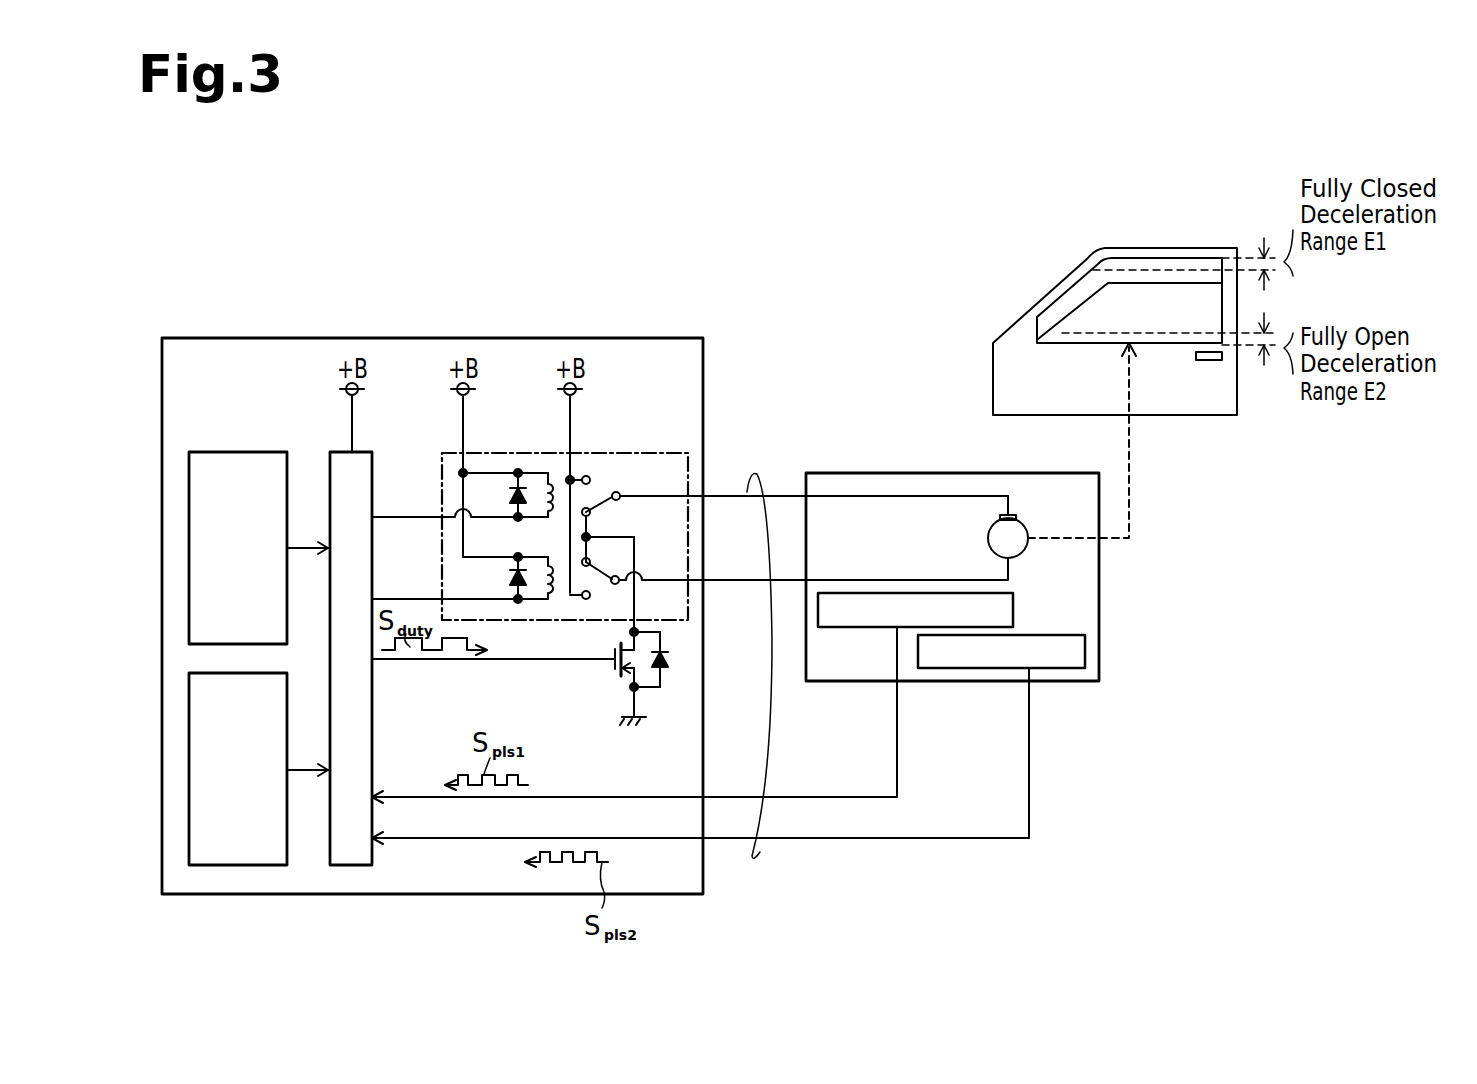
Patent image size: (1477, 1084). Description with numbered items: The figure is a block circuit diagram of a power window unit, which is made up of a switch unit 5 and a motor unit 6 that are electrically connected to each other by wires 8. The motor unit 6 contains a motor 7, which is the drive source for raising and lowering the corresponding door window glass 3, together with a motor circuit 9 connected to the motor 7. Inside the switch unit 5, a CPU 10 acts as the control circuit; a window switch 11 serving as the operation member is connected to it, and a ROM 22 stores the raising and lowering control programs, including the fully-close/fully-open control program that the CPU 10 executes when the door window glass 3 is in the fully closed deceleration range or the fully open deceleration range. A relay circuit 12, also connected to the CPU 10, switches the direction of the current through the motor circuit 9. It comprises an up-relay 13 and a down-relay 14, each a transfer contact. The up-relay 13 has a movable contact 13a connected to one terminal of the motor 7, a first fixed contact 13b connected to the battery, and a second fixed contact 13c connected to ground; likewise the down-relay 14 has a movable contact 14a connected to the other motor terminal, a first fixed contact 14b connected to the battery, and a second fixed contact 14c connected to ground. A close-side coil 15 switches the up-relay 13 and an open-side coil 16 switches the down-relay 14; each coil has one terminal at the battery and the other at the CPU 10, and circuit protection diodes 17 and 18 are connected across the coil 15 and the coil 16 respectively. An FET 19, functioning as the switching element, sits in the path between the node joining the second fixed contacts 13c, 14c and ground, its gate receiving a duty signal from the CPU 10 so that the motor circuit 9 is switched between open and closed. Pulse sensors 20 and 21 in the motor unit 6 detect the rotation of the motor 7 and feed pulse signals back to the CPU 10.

The door window glass 3 is at (1085, 313).
The switch unit 5 is at (513, 338).
The motor unit 6 is at (1099, 618).
The motor 7 is at (1018, 521).
The wires 8 is at (758, 853).
The motor circuit 9 is at (921, 490).
The CPU 10 is at (350, 866).
The window switch 11 is at (189, 531).
The relay circuit 12 is at (645, 453).
The up-relay 13 is at (607, 484).
The movable contact 13a is at (620, 494).
The first fixed contact 13b is at (586, 476).
The second fixed contact 13c is at (596, 512).
The down-relay 14 is at (600, 602).
The movable contact 14a is at (620, 578).
The first fixed contact 14b is at (586, 599).
The second fixed contact 14c is at (582, 561).
The close-side coil 15 is at (548, 471).
The open-side coil 16 is at (548, 601).
The circuit protection diode 17 is at (511, 498).
The circuit protection diode 18 is at (510, 580).
The FET 19 is at (609, 680).
The pulse sensor 20 is at (1013, 610).
The pulse sensor 21 is at (1060, 668).
The ROM 22 is at (189, 750).